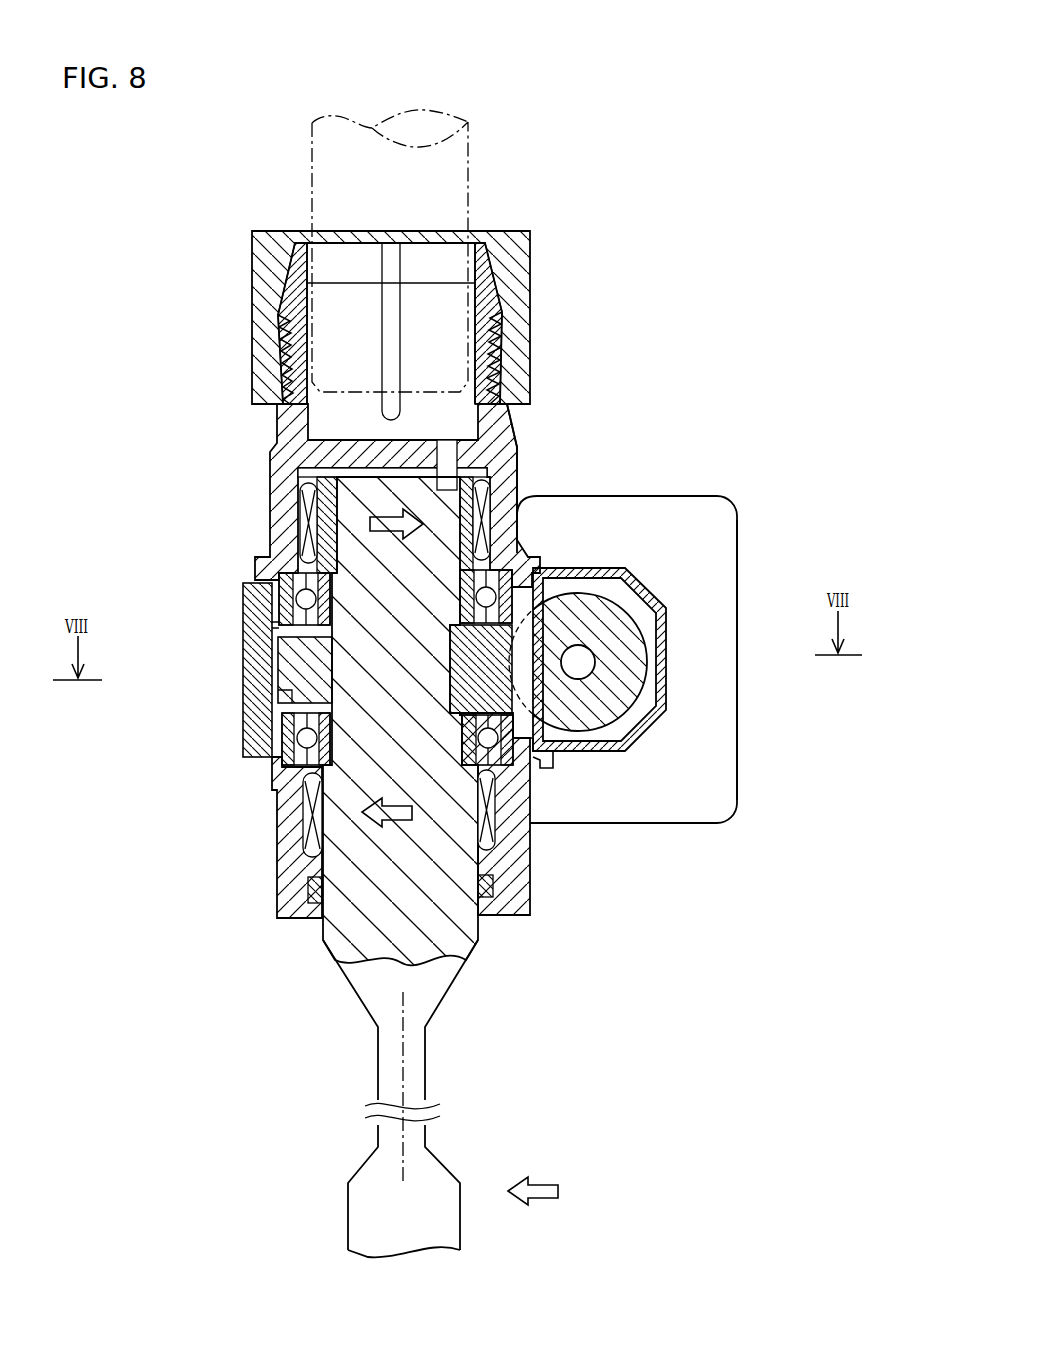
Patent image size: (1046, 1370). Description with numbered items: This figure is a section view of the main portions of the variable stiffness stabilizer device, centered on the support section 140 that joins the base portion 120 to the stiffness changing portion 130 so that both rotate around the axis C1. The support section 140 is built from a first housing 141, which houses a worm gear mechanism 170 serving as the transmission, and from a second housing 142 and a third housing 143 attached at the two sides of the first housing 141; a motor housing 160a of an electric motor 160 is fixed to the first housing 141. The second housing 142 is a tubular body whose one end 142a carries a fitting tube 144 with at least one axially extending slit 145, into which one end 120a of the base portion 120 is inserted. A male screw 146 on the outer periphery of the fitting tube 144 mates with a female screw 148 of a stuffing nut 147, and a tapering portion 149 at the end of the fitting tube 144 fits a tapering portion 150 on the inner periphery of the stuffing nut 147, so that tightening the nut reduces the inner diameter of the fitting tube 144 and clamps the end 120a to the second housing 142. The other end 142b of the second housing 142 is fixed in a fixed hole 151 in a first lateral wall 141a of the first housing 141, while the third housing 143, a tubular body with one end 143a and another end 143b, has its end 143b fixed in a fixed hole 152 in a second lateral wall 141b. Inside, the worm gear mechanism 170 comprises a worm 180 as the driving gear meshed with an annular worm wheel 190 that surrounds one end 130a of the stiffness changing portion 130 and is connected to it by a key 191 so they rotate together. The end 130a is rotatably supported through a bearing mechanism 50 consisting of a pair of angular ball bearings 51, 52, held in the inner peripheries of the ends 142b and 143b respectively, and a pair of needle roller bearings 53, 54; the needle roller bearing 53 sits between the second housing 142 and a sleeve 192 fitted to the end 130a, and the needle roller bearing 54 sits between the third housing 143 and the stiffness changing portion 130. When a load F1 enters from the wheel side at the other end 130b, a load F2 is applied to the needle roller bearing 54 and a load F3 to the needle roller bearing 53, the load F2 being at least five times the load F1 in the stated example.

The base portion 120 is at (470, 143).
The one end of the base portion 120a is at (468, 207).
The stiffness changing portion 130 is at (438, 1043).
The one end of the stiffness changing portion 130a is at (347, 543).
The other end of the stiffness changing portion 130b is at (456, 1220).
The support section 140 is at (538, 912).
The first housing 141 is at (667, 632).
The first lateral wall 141a is at (588, 568).
The second lateral wall 141b is at (645, 752).
The second housing 142 is at (259, 479).
The one end of the second housing 142a is at (487, 277).
The other end of the second housing 142b is at (527, 565).
The third housing 143 is at (266, 849).
The one end of the third housing 143a is at (310, 897).
The other end of the third housing 143b is at (275, 762).
The fitting tube 144 is at (286, 372).
The slit 145 is at (390, 263).
The male screw 146 is at (502, 332).
The stuffing nut 147 is at (545, 305).
The female screw 148 is at (497, 368).
The tapering portion 149 is at (288, 284).
The tapering portion 150 is at (316, 245).
The fixed hole 151 is at (519, 552).
The fixed hole 152 is at (537, 760).
The electric motor 160 is at (687, 482).
The motor housing 160a is at (737, 541).
The worm gear mechanism 170 is at (647, 709).
The worm 180 is at (596, 662).
The worm wheel 190 is at (285, 655).
The key 191 is at (462, 677).
The sleeve 192 is at (325, 520).
The bearing mechanism 50 is at (265, 624).
The ball bearing 51 is at (305, 600).
The ball bearing 52 is at (300, 738).
The needle roller bearing 53 is at (305, 552).
The needle roller bearing 54 is at (308, 815).
The axis C1 is at (412, 1082).
The load F1 is at (540, 1177).
The load F2 is at (393, 828).
The load F3 is at (383, 512).